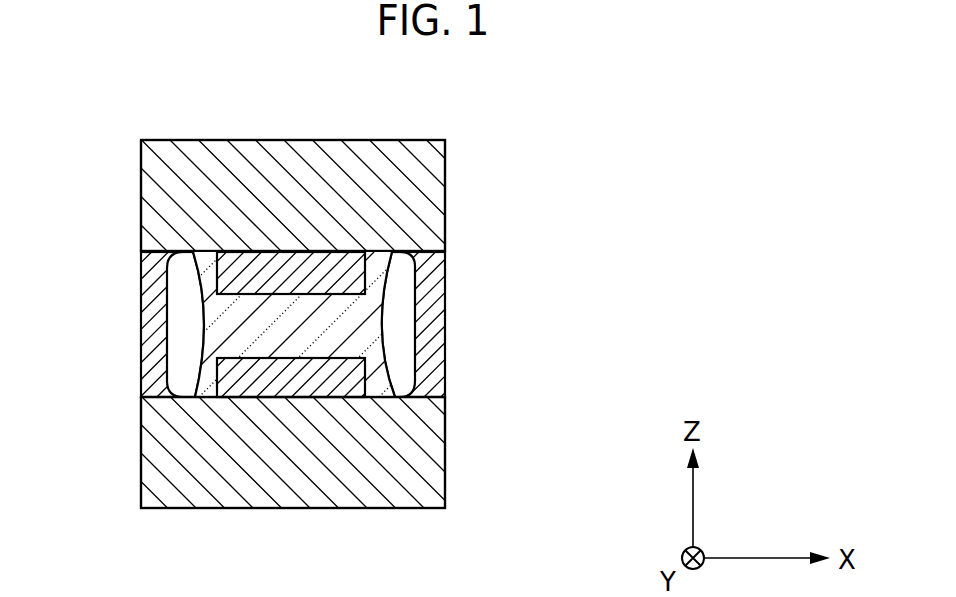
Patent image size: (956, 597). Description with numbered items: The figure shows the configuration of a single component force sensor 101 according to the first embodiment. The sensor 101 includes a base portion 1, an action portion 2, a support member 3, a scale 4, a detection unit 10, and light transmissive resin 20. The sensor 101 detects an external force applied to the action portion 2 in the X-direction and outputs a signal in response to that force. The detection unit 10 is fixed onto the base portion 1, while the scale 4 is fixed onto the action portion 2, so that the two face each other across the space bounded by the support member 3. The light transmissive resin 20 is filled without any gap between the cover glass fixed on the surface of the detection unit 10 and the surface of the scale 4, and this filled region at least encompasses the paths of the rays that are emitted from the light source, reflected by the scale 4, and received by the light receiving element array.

The sensor 101 is at (468, 99).
The base portion 1 is at (445, 443).
The action portion 2 is at (445, 177).
The support member 3 is at (445, 289).
The scale 4 is at (292, 266).
The detection unit 10 is at (252, 381).
The light transmissive resin 20 is at (343, 342).